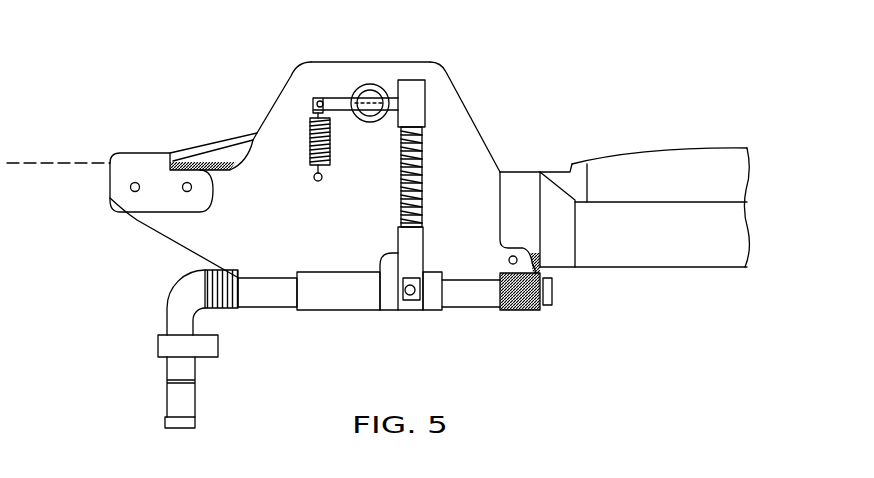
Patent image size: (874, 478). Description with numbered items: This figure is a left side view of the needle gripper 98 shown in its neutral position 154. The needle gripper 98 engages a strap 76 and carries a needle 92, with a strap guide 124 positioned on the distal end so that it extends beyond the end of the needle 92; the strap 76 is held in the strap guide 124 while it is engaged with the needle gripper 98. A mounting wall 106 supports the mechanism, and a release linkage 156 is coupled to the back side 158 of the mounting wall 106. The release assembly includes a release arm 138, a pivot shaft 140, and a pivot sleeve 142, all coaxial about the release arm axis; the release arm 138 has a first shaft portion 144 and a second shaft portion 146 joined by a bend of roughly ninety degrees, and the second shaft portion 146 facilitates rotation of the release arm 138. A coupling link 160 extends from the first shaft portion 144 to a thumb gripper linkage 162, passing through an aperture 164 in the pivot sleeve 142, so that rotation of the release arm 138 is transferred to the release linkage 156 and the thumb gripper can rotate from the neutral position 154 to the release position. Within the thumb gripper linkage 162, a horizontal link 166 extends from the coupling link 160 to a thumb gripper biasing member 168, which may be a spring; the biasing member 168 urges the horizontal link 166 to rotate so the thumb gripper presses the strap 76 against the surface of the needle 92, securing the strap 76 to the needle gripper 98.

The strap 76 is at (58, 163).
The needle 92 is at (687, 187).
The needle gripper 98 is at (685, 83).
The mounting wall 106 is at (293, 82).
The strap guide 124 is at (168, 122).
The release arm 138 is at (170, 288).
The pivot shaft 140 is at (262, 300).
The pivot sleeve 142 is at (340, 305).
The first shaft portion 144 is at (552, 293).
The second shaft portion 146 is at (180, 430).
The neutral position 154 is at (113, 108).
The release linkage 156 is at (447, 323).
The back side 158 is at (478, 121).
The coupling link 160 is at (383, 312).
The thumb gripper linkage 162 is at (390, 53).
The aperture 164 is at (427, 288).
The horizontal link 166 is at (328, 97).
The thumb gripper biasing member 168 is at (332, 152).